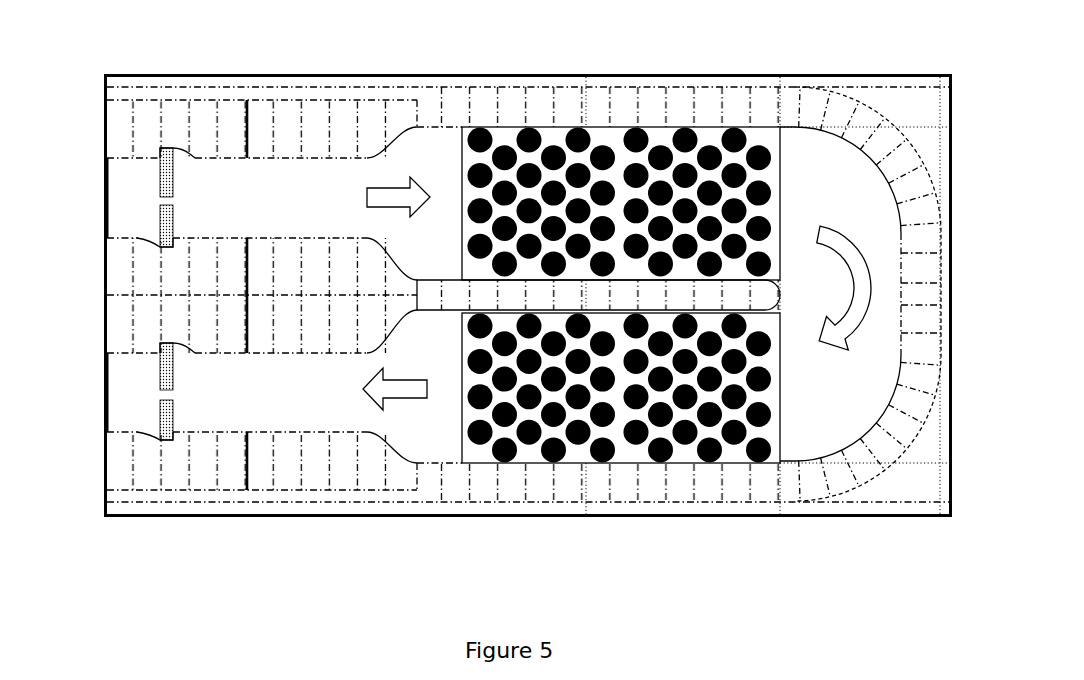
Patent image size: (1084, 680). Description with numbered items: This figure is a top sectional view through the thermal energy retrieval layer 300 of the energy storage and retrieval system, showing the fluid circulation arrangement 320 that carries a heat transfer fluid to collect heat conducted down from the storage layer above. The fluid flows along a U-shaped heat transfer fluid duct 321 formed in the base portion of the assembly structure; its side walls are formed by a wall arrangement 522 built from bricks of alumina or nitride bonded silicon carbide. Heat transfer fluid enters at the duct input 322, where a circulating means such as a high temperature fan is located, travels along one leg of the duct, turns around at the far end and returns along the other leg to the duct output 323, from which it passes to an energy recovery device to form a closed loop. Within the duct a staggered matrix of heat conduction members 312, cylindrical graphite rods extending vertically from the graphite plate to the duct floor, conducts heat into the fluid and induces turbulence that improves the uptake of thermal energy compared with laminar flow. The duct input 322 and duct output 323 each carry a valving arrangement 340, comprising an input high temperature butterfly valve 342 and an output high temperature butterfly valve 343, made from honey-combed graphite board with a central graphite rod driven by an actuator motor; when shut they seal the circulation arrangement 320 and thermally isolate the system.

The thermal energy retrieval layer 300 is at (811, 152).
The heat conduction members 312 is at (528, 130).
The fluid circulation arrangement 320 is at (320, 208).
The U-shaped heat transfer fluid duct 321 is at (402, 152).
The duct input 322 is at (117, 185).
The duct output 323 is at (117, 375).
The valving arrangement 340 is at (198, 177).
The input high temperature butterfly valve 342 is at (170, 200).
The output high temperature butterfly valve 343 is at (172, 390).
The wall arrangement 522 is at (705, 97).